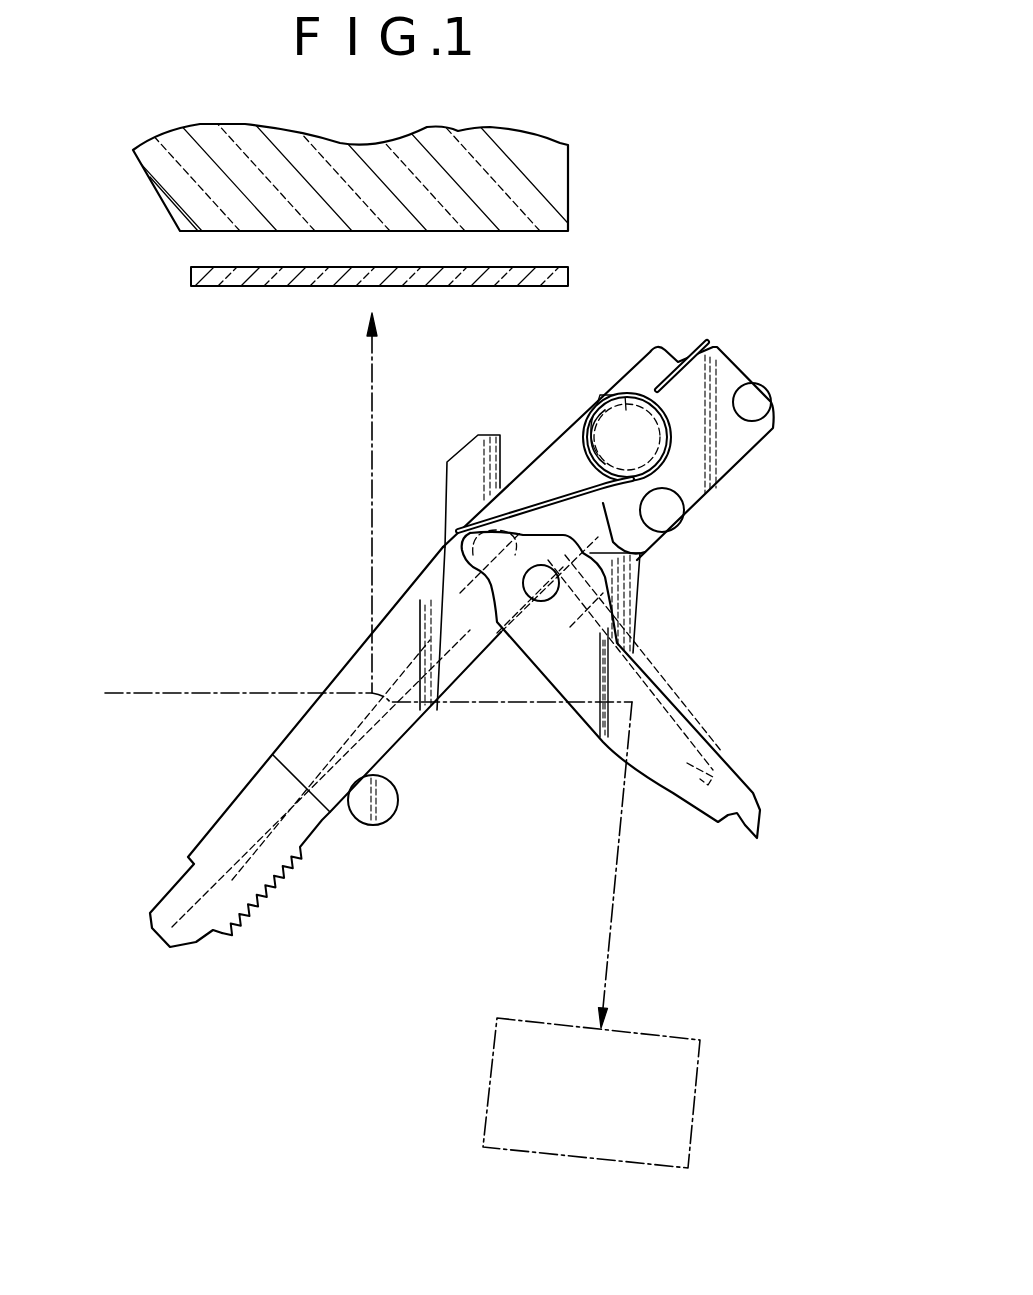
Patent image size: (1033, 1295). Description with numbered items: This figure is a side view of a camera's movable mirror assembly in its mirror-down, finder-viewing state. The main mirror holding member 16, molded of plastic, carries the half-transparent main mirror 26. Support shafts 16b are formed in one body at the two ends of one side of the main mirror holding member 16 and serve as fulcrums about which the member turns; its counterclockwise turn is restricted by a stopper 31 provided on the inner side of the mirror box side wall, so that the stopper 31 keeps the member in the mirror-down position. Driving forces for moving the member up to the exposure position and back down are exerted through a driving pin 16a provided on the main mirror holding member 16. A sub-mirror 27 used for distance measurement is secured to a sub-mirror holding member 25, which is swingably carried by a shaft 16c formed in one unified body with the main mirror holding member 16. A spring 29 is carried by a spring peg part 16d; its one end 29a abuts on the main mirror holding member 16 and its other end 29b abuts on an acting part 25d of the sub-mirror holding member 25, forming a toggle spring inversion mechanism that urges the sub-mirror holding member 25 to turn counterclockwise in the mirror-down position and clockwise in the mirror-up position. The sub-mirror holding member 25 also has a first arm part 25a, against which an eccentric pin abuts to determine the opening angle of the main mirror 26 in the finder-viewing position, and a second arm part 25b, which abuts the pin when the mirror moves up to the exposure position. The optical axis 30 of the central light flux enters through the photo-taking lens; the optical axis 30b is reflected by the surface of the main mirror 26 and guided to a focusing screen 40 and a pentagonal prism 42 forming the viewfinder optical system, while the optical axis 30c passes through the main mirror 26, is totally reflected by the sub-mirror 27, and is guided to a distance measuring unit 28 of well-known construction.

The main mirror holding member 16 is at (352, 662).
The driving pin 16a is at (668, 512).
The support shafts 16b is at (752, 397).
The shaft 16c is at (547, 603).
The spring peg part 16d is at (613, 423).
The sub-mirror holding member 25 is at (653, 678).
The first arm part 25a is at (640, 578).
The second arm part 25b is at (473, 457).
The acting part 25d is at (462, 535).
The main mirror 26 is at (308, 755).
The sub-mirror 27 is at (685, 767).
The distance measuring unit 28 is at (520, 1018).
The spring 29 is at (561, 404).
The one end of spring 29a is at (703, 345).
The other end of spring 29b is at (460, 530).
The optical axis 30 is at (138, 692).
The optical axis 30b is at (370, 452).
The optical axis 30c is at (616, 866).
The stopper 31 is at (383, 823).
The focusing screen 40 is at (555, 277).
The pentagonal prism 42 is at (548, 187).